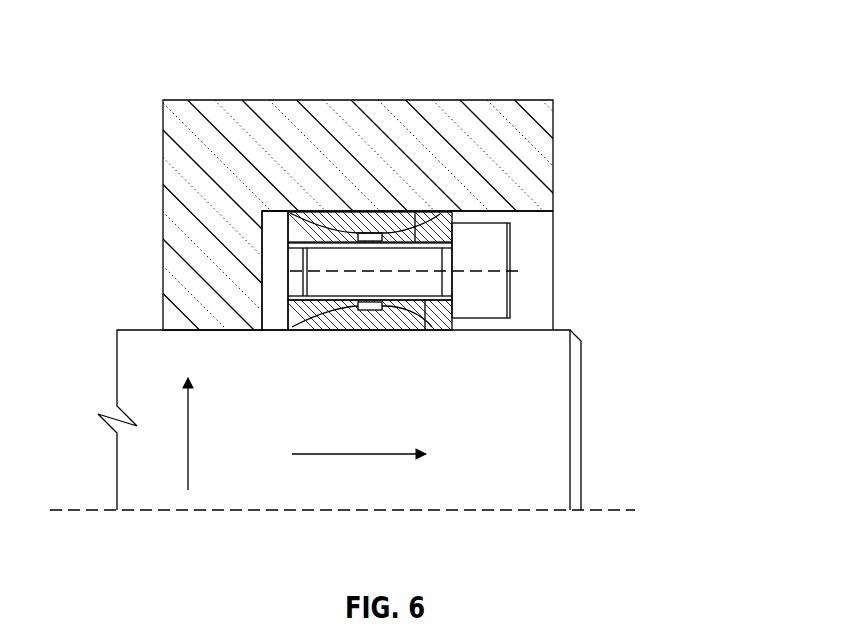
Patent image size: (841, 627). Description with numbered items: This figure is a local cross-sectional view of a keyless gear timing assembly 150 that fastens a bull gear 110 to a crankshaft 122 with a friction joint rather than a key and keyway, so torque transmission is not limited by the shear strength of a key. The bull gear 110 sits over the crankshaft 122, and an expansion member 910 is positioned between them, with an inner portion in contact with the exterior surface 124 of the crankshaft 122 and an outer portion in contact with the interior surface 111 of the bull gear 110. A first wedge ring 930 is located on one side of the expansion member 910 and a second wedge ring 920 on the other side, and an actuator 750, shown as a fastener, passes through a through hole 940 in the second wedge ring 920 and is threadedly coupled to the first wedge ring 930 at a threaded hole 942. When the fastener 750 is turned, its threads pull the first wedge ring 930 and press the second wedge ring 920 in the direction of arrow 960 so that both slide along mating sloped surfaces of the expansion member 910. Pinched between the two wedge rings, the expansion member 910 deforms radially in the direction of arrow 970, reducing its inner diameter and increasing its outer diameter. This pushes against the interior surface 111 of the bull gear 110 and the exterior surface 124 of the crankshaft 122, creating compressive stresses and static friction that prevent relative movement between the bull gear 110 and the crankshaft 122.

The bull gear 110 is at (548, 142).
The interior surface 111 is at (271, 211).
The crankshaft 122 is at (390, 438).
The exterior surface 124 is at (541, 331).
The keyless gear timing assembly 150 is at (586, 210).
The actuator 750 is at (488, 297).
The expansion member 910 is at (340, 212).
The second wedge ring 920 is at (425, 312).
The first wedge ring 930 is at (307, 318).
The through hole 940 is at (415, 212).
The threaded hole 942 is at (300, 211).
The arrow 960 is at (360, 456).
The arrow 970 is at (186, 425).